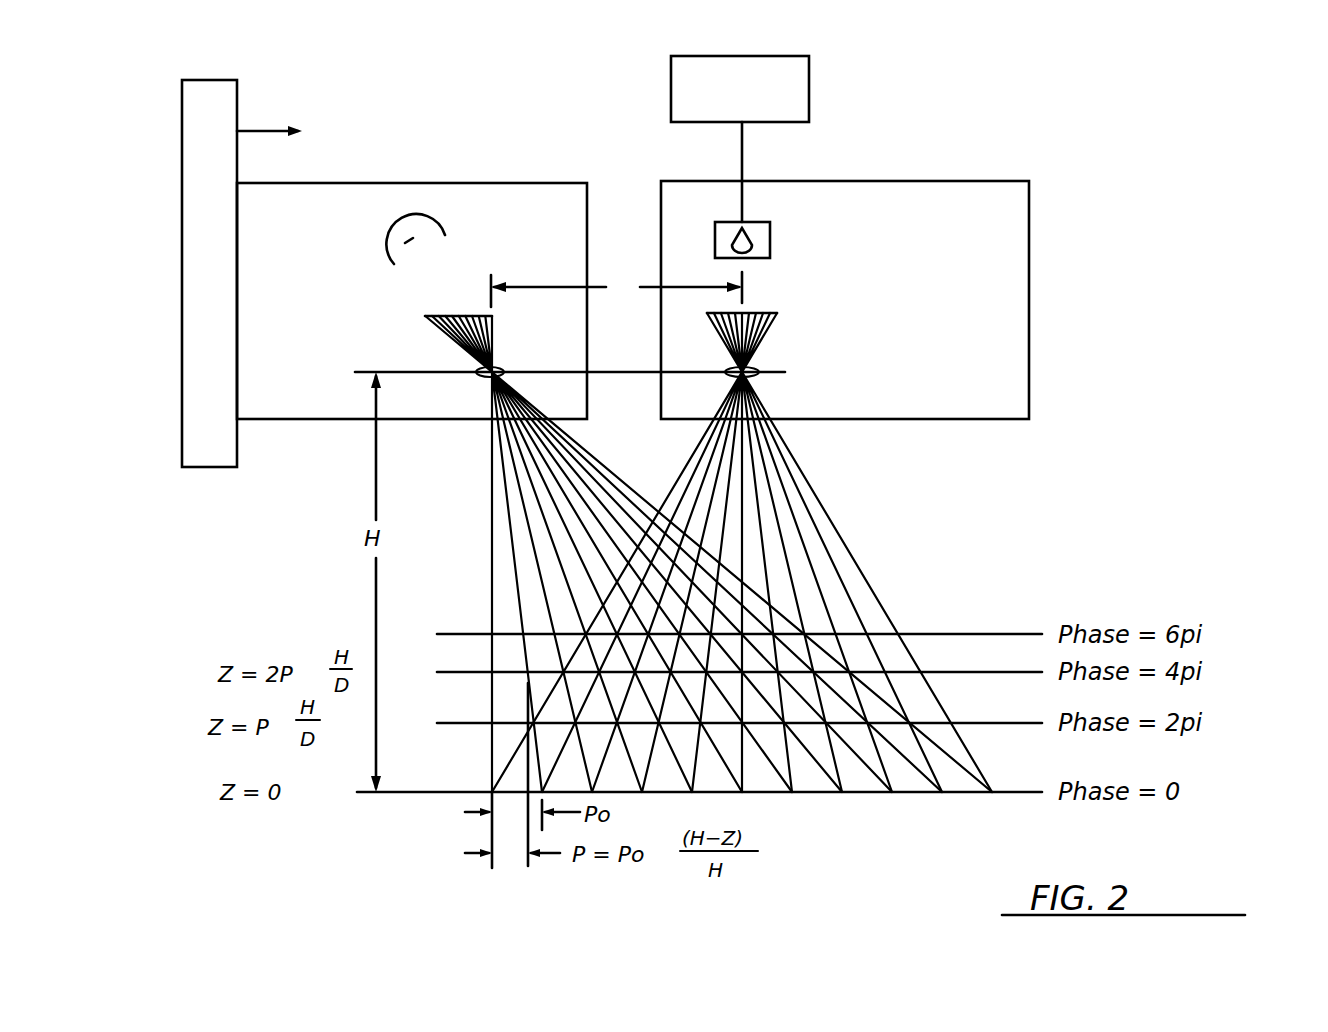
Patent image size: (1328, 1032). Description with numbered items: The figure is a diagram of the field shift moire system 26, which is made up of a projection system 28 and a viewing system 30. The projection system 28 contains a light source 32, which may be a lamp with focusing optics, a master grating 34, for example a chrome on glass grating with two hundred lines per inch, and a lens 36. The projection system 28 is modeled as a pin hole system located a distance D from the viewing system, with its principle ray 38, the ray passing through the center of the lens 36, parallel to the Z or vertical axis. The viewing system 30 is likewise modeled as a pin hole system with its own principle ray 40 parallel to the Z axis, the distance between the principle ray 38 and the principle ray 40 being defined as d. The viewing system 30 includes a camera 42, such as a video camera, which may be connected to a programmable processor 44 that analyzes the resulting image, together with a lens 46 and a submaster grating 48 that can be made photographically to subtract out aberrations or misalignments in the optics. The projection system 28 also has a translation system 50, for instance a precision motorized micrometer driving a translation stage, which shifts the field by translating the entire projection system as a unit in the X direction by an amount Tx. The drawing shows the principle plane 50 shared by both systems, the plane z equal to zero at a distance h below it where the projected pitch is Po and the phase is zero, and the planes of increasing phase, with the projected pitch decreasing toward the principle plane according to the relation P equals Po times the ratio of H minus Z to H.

The field shift moire system 26 is at (1112, 216).
The projection system 28 is at (509, 183).
The viewing system 30 is at (1029, 287).
The light source 32 is at (392, 251).
The master grating 34 is at (437, 315).
The lens 36 is at (503, 371).
The principle ray 38 is at (490, 468).
The principle ray 40 is at (745, 297).
The camera 42 is at (770, 238).
The programmable processor 44 is at (798, 83).
The lens 46 is at (760, 378).
The submaster grating 48 is at (712, 313).
The translation system 50 is at (182, 293).